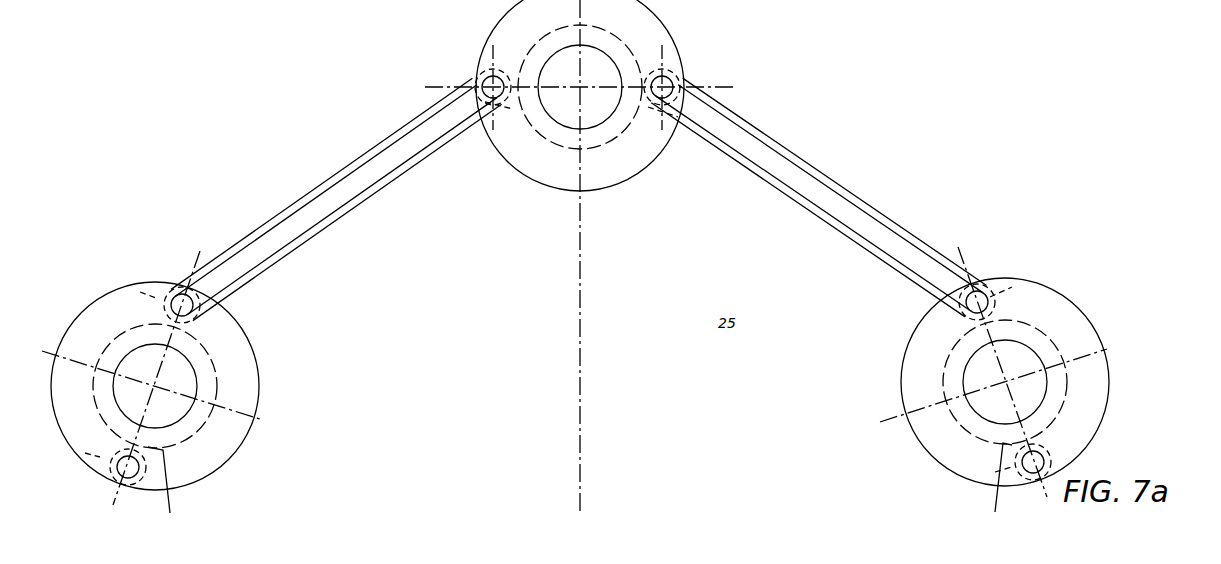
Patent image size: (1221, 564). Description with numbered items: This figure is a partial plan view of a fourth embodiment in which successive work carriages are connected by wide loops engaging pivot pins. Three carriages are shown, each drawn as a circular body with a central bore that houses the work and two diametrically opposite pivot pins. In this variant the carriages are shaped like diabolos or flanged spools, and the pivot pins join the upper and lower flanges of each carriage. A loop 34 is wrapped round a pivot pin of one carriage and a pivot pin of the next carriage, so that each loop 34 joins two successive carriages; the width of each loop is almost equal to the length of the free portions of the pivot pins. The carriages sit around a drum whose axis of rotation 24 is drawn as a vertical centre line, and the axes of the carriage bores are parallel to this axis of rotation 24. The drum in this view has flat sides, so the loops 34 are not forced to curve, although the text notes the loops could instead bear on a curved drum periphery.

The axis of rotation 24 is at (584, 507).
The loop 34 is at (300, 202).